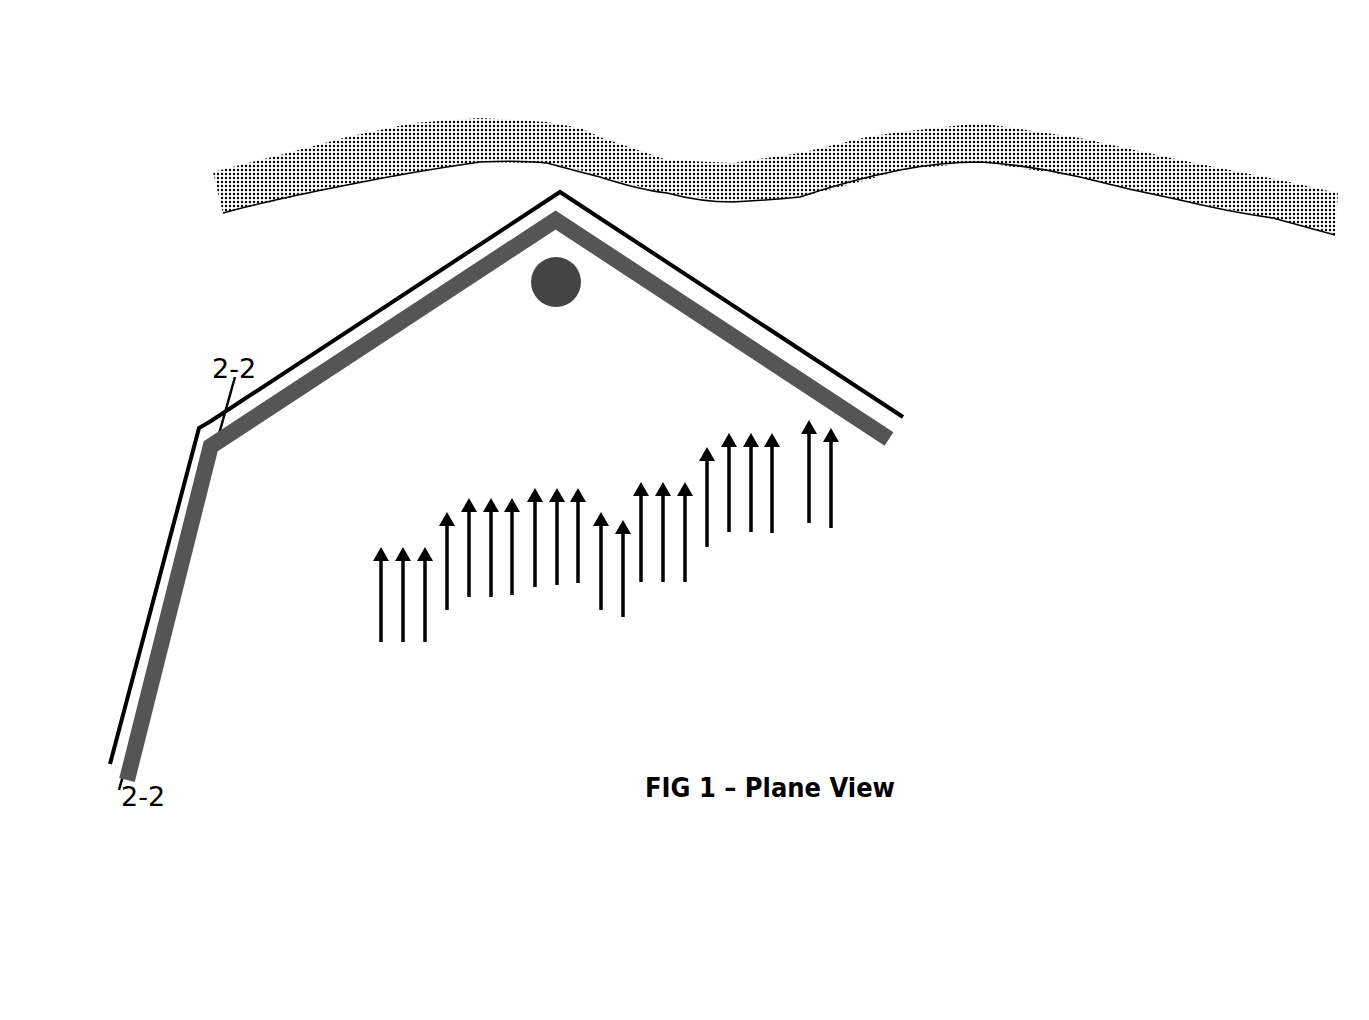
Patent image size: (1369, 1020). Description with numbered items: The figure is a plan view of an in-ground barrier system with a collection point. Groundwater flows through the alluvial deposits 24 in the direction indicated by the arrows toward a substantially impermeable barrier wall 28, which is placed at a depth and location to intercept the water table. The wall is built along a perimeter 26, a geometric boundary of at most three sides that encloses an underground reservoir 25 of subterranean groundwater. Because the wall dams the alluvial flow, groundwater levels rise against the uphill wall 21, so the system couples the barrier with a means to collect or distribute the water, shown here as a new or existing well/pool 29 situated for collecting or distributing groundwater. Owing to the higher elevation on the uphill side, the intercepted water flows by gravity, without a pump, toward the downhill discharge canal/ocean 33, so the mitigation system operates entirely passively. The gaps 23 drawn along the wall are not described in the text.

The uphill wall 21 is at (742, 355).
The gap 23 is at (463, 235).
The alluvial deposits 24 is at (425, 600).
The underground reservoir 25 is at (593, 275).
The perimeter 26 is at (900, 415).
The barrier wall 28 is at (520, 262).
The well/pool 29 is at (558, 280).
The downhill discharge canal/ocean 33 is at (292, 208).